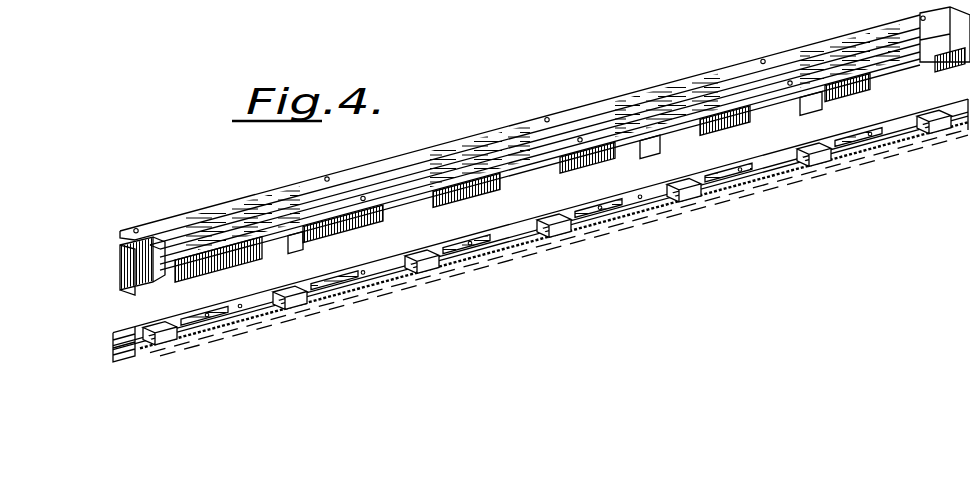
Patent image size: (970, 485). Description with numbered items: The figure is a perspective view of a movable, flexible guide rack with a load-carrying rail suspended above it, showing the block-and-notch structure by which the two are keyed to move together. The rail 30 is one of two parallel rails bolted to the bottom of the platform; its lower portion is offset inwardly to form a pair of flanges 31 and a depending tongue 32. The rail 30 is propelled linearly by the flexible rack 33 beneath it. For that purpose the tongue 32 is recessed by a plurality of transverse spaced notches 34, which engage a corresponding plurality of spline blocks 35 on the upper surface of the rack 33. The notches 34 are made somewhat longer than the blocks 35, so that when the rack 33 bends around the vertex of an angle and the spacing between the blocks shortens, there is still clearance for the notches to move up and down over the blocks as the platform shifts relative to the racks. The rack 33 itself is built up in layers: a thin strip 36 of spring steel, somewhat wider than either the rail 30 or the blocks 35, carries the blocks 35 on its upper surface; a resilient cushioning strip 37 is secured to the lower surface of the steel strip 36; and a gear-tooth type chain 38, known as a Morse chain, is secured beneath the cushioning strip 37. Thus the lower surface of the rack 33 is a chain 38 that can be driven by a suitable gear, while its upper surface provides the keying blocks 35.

The rail 30 is at (250, 215).
The flanges 31 is at (470, 196).
The depending tongue 32 is at (194, 268).
The flexible rack 33 is at (640, 200).
The notches 34 is at (297, 240).
The spline blocks 35 is at (425, 247).
The strip 36 is at (175, 322).
The resilient cushioning strip 37 is at (114, 352).
The gear-tooth type chain 38 is at (522, 250).